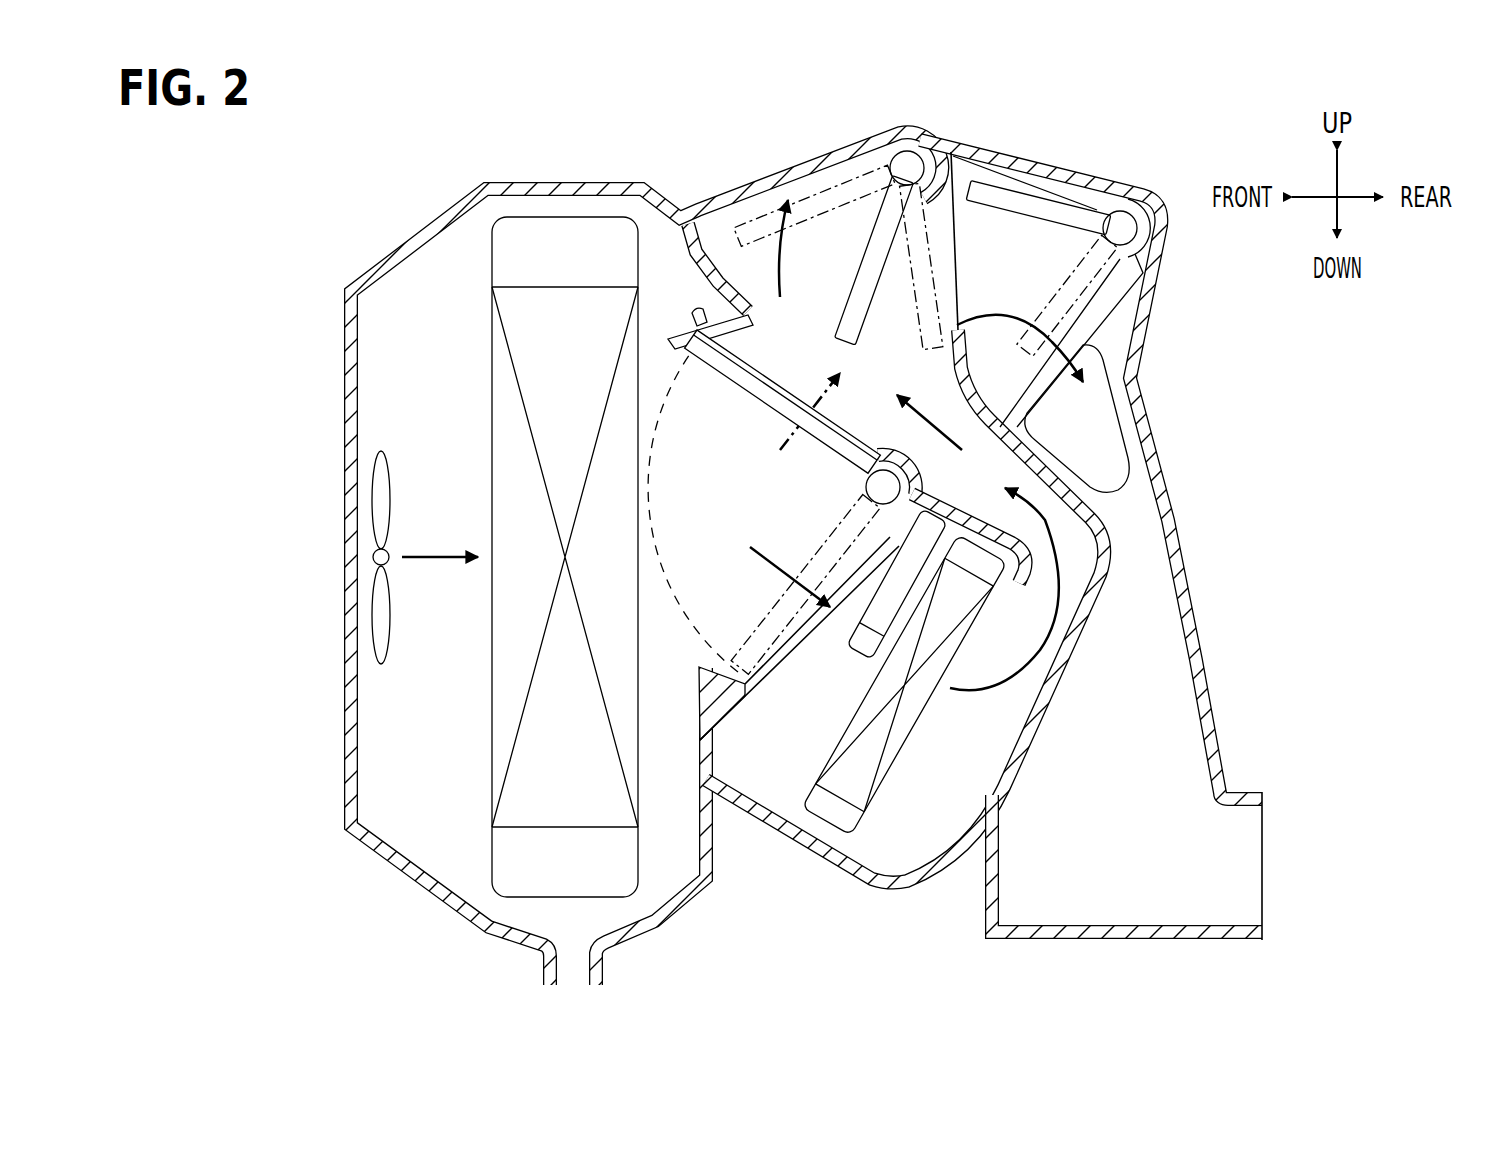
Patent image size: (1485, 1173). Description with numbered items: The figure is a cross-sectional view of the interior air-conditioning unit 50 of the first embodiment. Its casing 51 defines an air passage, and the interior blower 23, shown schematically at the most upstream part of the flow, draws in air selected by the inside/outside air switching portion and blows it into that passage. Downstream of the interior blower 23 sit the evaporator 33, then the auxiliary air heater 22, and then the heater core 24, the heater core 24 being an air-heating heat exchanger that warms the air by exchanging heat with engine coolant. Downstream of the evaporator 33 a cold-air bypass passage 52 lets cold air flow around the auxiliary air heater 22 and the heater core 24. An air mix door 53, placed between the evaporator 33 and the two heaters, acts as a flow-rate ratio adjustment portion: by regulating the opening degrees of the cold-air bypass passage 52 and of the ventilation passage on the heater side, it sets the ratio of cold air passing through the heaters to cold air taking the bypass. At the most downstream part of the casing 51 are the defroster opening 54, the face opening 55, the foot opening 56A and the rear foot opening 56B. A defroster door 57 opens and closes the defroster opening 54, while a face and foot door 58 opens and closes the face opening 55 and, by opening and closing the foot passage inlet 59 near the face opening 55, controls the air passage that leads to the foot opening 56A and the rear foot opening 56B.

The interior air-conditioning unit 50 is at (375, 203).
The casing 51 is at (440, 210).
The evaporator 33 is at (570, 245).
The interior blower 23 is at (375, 603).
The cold-air bypass passage 52 is at (778, 373).
The air mix door 53 is at (747, 397).
The defroster opening 54 is at (790, 178).
The face opening 55 is at (1035, 160).
The defroster door 57 is at (862, 215).
The face and foot door 58 is at (1060, 200).
The foot passage inlet 59 is at (1085, 315).
The foot opening 56A is at (1100, 455).
The rear foot opening 56B is at (1265, 860).
The auxiliary air heater 22 is at (867, 650).
The heater core 24 is at (825, 815).